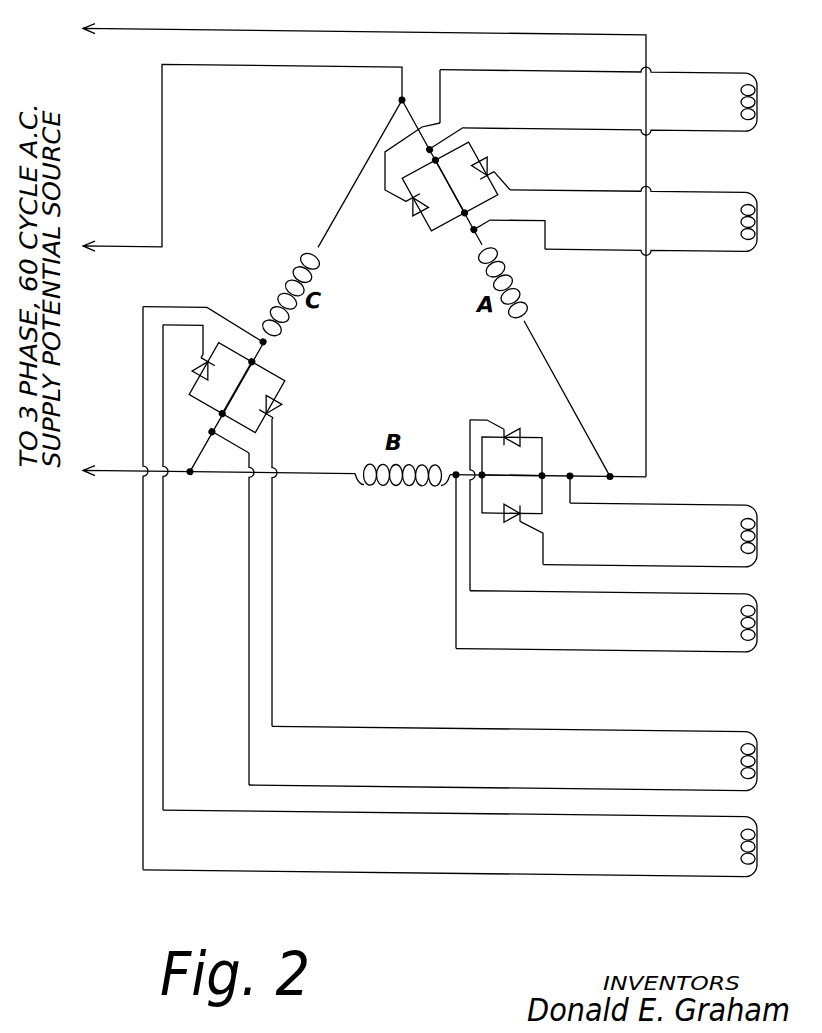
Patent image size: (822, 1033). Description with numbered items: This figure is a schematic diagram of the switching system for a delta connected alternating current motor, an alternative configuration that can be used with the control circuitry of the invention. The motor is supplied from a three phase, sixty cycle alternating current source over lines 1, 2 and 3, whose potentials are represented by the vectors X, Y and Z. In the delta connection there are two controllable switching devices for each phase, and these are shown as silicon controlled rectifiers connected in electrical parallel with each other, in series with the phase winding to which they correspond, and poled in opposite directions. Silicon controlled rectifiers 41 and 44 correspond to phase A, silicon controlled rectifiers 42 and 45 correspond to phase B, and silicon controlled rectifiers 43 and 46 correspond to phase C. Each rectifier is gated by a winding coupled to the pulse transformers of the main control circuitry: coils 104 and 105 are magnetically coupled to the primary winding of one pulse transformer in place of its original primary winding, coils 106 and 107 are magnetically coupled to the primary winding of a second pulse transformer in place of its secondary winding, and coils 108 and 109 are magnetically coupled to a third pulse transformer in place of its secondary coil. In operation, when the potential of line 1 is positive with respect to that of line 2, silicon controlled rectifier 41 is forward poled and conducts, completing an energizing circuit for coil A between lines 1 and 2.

The line 1 is at (242, 173).
The line 2 is at (364, 249).
The line 3 is at (364, 488).
The silicon controlled rectifier 41 is at (491, 156).
The silicon controlled rectifier 42 is at (515, 424).
The silicon controlled rectifier 43 is at (192, 368).
The silicon controlled rectifier 44 is at (413, 205).
The silicon controlled rectifier 45 is at (512, 517).
The silicon controlled rectifier 46 is at (278, 405).
The coil 104 is at (760, 219).
The coil 105 is at (760, 99).
The coil 106 is at (757, 619).
The coil 107 is at (757, 534).
The coil 108 is at (757, 844).
The coil 109 is at (757, 759).